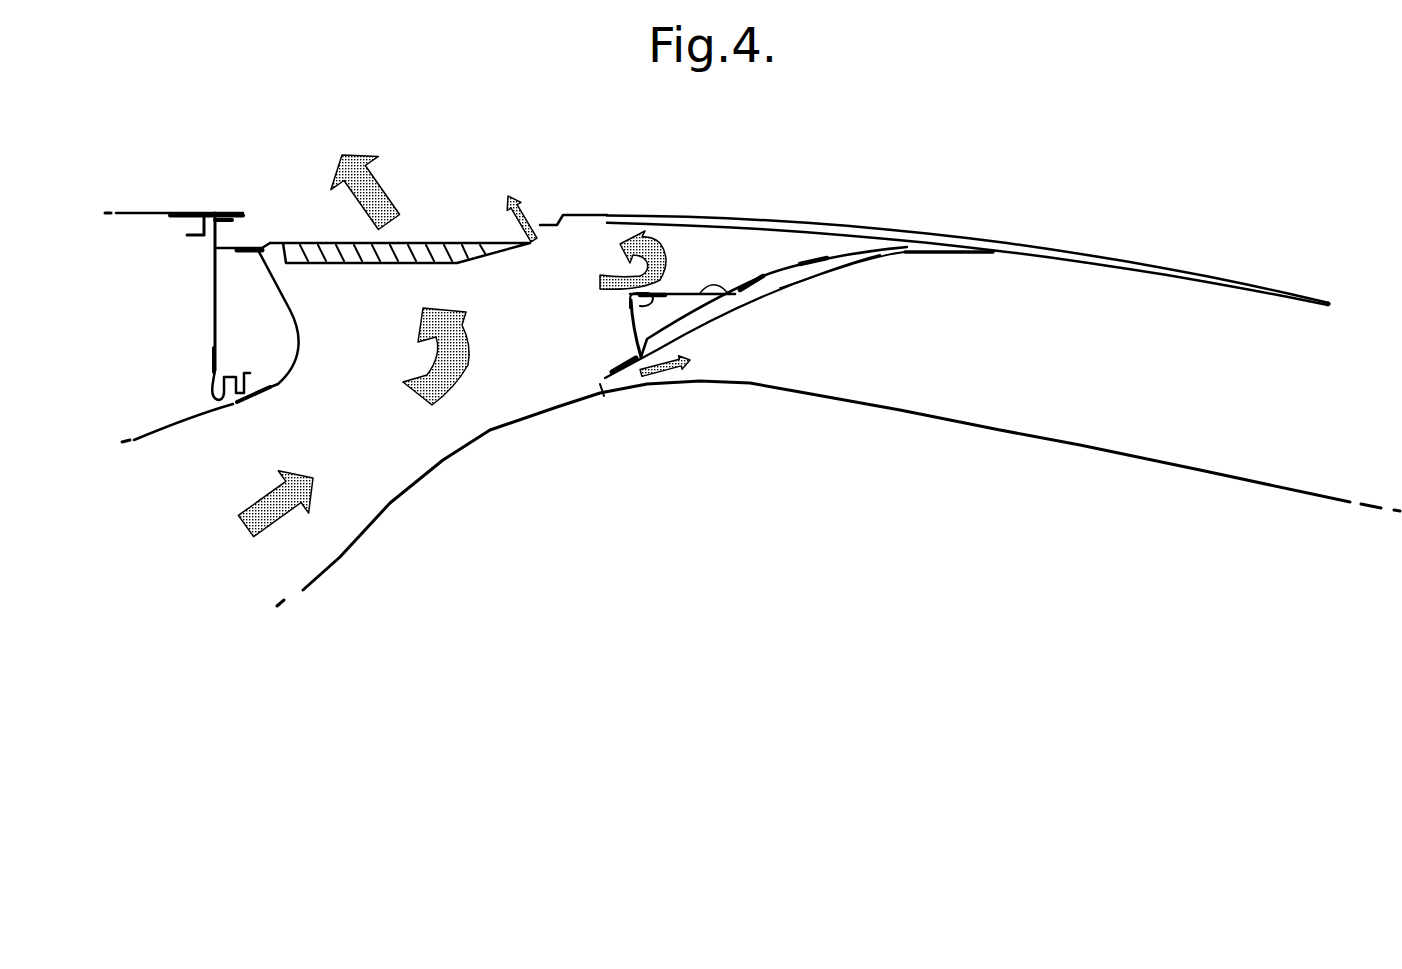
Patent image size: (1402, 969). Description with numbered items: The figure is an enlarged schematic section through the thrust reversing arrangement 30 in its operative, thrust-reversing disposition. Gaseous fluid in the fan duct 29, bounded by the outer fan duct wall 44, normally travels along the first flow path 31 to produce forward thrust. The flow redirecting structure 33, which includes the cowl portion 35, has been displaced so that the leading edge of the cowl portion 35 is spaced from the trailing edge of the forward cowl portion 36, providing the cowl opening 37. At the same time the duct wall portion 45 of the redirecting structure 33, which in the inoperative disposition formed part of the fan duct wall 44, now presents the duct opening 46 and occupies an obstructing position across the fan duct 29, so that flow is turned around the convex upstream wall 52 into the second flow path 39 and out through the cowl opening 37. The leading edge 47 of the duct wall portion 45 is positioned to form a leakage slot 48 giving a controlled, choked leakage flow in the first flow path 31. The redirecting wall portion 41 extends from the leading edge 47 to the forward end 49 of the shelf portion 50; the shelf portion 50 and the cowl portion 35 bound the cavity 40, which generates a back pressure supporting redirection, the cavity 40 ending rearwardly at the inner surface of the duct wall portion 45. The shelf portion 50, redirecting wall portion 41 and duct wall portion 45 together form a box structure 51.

The fan duct 29 is at (423, 440).
The thrust reversing arrangement 30 is at (551, 141).
The first flow path 31 is at (310, 538).
The flow redirecting structure 33 is at (752, 215).
The cowl portion 35 is at (940, 250).
The forward cowl portion 36 is at (157, 211).
The cowl opening 37 is at (470, 226).
The second flow path 39 is at (386, 168).
The cavity 40 is at (695, 255).
The redirecting wall portion 41 is at (630, 323).
The outer fan duct wall 44 is at (167, 433).
The duct wall portion 45 is at (802, 270).
The duct opening 46 is at (375, 366).
The leading edge 47 is at (602, 377).
The leakage slot 48 is at (604, 394).
The forward end 49 is at (630, 305).
The shelf portion 50 is at (745, 300).
The box structure 51 is at (664, 314).
The upstream wall 52 is at (292, 300).